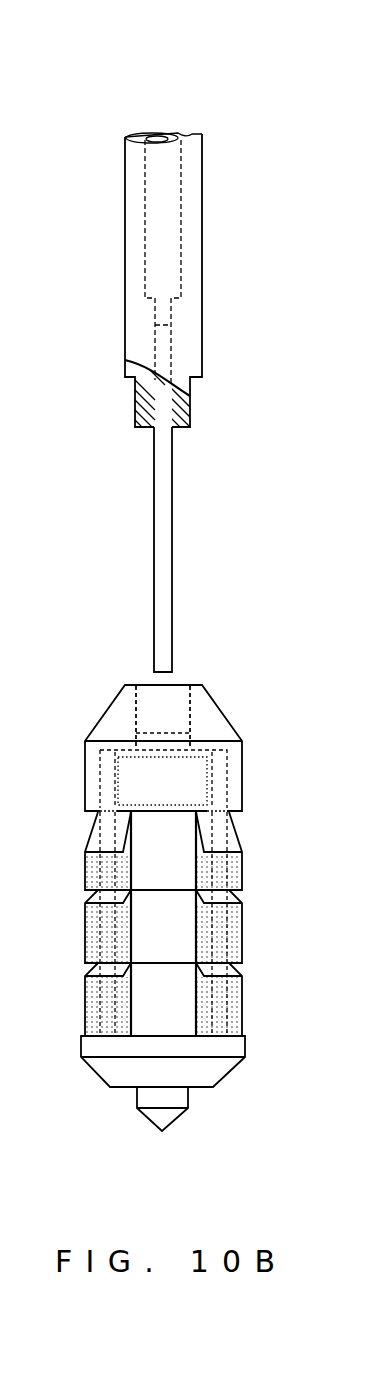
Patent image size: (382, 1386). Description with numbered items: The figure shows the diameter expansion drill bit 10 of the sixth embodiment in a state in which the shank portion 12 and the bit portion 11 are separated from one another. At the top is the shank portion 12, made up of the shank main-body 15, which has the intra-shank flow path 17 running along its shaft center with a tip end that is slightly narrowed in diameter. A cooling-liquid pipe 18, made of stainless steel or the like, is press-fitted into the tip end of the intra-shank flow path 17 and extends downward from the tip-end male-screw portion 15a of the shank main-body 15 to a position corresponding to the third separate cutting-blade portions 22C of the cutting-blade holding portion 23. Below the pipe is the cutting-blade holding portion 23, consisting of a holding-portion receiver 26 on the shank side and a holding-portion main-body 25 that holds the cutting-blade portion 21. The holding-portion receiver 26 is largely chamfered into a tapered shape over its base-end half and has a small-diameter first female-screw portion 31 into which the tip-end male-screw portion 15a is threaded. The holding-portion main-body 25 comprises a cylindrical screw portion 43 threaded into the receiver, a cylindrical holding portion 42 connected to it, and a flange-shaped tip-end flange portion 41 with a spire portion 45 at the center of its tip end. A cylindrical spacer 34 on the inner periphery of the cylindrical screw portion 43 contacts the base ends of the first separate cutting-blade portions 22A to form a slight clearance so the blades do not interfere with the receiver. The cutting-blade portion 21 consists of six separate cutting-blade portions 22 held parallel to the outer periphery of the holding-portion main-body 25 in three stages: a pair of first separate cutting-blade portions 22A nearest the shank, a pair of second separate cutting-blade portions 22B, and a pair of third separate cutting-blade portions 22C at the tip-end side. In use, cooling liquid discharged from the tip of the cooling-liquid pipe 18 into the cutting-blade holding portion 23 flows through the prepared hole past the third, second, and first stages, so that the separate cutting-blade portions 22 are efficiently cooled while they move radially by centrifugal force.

The diameter expansion drill bit 10 is at (165, 70).
The tip unit 11 is at (236, 676).
The shank portion 12 is at (216, 197).
The shank main-body 15 is at (125, 251).
The tip-end male-screw portion 15a is at (190, 415).
The intra-shank flow path 17 is at (168, 260).
The cooling-liquid pipe 18 is at (172, 513).
The cutting-blade portion 21 is at (256, 832).
The separate cutting-blade portions 22 is at (217, 932).
The first separate cutting-blade portions 22A is at (243, 870).
The second separate cutting-blade portions 22B is at (243, 938).
The third separate cutting-blade portions 22C is at (243, 1008).
The cutting-blade holding portion 23 is at (98, 1131).
The holding-portion main-body 25 is at (256, 1080).
The holding-portion receiver 26 is at (240, 710).
The first female-screw portion 31 is at (180, 698).
The spacer 34 is at (187, 789).
The tip-end flange portion 41 is at (98, 1073).
The cylindrical holding portion 42 is at (96, 926).
The cylindrical screw portion 43 is at (97, 785).
The spire portion 45 is at (180, 1120).